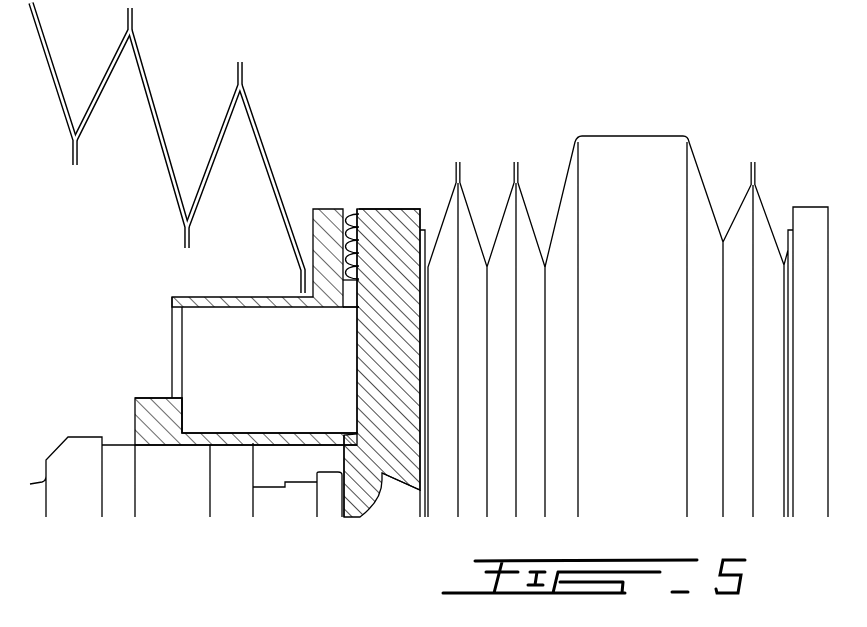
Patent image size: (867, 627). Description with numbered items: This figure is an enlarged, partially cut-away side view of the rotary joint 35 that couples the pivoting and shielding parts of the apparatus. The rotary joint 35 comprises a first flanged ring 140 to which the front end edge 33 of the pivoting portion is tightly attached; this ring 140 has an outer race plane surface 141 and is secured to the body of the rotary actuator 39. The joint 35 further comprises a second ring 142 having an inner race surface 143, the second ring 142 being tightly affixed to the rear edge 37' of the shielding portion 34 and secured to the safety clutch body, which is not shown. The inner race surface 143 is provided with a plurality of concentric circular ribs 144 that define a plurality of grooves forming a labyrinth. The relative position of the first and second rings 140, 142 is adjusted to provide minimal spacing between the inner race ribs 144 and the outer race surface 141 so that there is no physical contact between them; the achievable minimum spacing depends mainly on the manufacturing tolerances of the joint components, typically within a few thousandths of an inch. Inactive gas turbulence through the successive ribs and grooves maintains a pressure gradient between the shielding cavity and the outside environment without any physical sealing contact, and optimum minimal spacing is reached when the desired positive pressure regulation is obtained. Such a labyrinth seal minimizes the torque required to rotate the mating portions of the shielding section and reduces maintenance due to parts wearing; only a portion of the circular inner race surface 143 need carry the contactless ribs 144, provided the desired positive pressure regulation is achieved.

The front end edge 33 is at (301, 262).
The shielding portion 34 is at (620, 148).
The rotary joint 35 is at (362, 184).
The rear edge 37' is at (486, 289).
The rotary actuator 39 is at (115, 470).
The first flanged ring 140 is at (325, 208).
The outer race plane surface 141 is at (402, 208).
The second ring 142 is at (380, 445).
The inner race surface 143 is at (345, 282).
The concentric circular ribs 144 is at (345, 258).